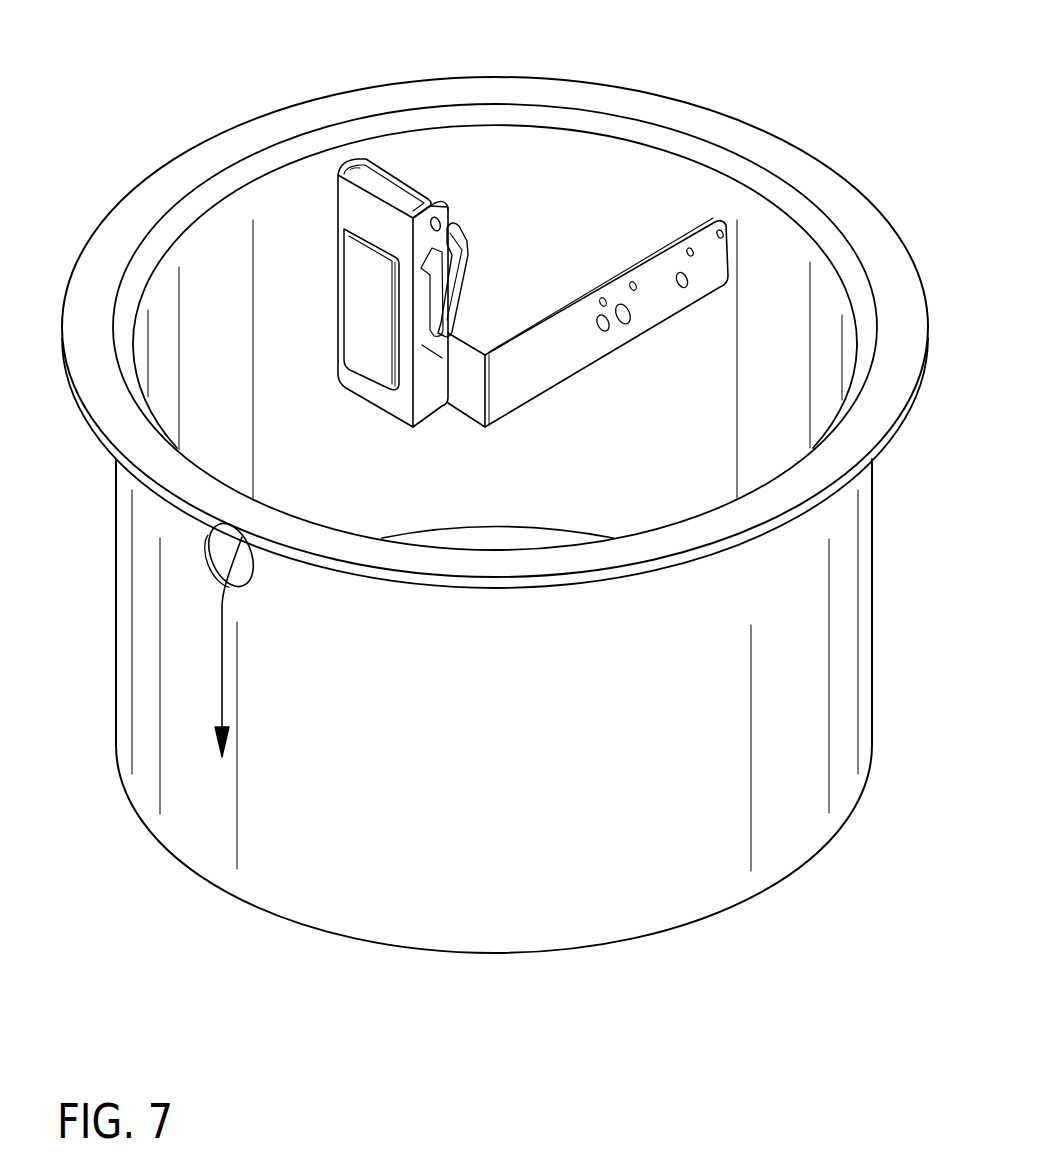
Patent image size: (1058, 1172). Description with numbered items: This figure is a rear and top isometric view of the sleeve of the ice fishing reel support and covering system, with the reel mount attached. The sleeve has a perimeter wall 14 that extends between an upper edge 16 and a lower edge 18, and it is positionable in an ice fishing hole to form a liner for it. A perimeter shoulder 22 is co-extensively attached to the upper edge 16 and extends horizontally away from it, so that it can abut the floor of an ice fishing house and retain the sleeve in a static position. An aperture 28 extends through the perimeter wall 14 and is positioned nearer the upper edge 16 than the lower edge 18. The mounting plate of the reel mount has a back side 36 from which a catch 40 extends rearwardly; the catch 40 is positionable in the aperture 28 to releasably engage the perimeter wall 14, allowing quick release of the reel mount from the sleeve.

The perimeter wall 14 is at (873, 590).
The upper edge 16 is at (752, 162).
The lower edge 18 is at (755, 892).
The perimeter shoulder 22 is at (862, 232).
The aperture 28 is at (226, 550).
The back side 36 is at (350, 210).
The catch 40 is at (262, 497).